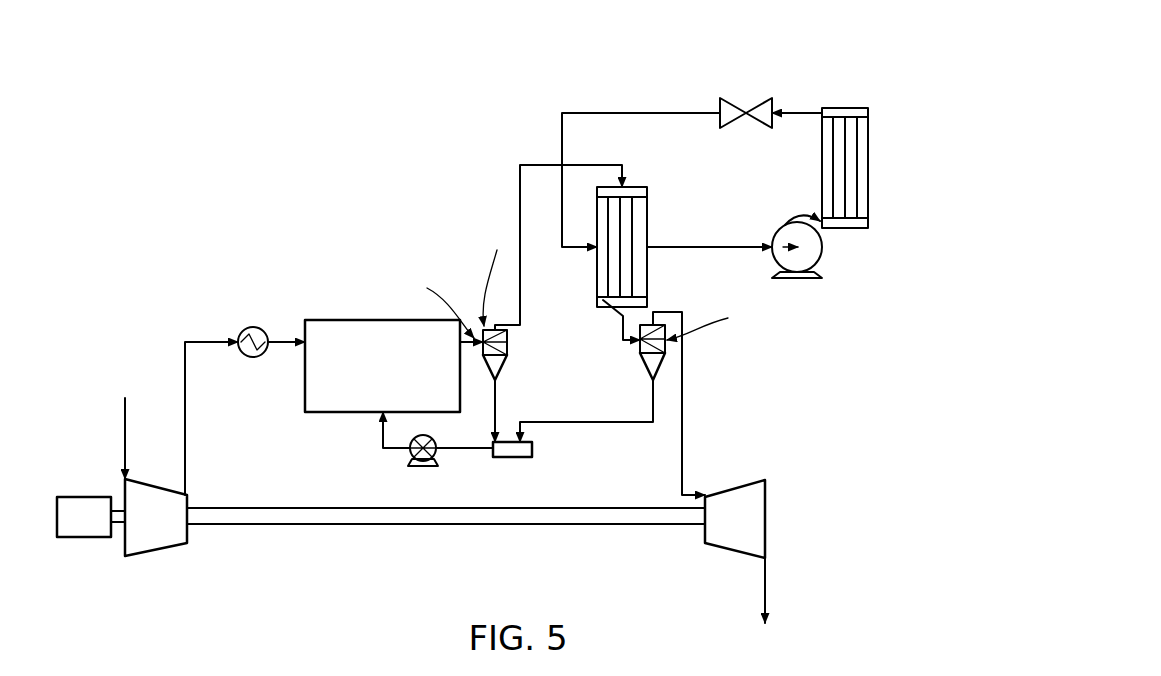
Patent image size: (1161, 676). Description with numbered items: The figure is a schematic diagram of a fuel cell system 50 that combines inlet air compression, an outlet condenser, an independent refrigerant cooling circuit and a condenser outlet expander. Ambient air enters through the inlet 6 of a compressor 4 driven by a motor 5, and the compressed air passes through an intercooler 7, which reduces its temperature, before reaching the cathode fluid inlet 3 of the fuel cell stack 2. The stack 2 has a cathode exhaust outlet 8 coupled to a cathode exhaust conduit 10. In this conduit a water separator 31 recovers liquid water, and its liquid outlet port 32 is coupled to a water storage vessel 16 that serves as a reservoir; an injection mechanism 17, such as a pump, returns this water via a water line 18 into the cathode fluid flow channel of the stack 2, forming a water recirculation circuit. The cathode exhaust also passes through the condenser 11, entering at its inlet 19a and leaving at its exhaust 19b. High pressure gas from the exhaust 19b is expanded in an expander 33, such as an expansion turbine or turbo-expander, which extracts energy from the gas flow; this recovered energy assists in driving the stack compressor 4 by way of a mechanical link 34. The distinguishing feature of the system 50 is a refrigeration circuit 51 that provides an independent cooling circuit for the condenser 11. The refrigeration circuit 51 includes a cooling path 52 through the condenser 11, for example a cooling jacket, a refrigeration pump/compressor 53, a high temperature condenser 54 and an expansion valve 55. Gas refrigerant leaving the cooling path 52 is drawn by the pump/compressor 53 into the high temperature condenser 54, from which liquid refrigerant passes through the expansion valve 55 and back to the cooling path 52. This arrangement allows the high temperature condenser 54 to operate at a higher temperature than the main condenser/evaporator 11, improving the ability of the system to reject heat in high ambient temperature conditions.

The fuel cell stack 2 is at (352, 320).
The cathode fluid inlet 3 is at (278, 340).
The compressor 4 is at (160, 548).
The motor 5 is at (85, 537).
The inlet 6 is at (122, 425).
The intercooler 7 is at (255, 357).
The cathode exhaust outlet 8 is at (465, 346).
The cathode exhaust conduit 10 is at (520, 178).
The condenser 11 is at (585, 243).
The water storage vessel 16 is at (532, 450).
The injection mechanism 17 is at (415, 460).
The water line 18 is at (383, 440).
The condenser inlet 19a is at (622, 185).
The condenser exhaust 19b is at (600, 298).
The water separator 31 is at (508, 345).
The liquid outlet port 32 is at (497, 380).
The expander 33 is at (765, 515).
The mechanical link 34 is at (437, 525).
The fuel cell system 50 is at (330, 142).
The refrigeration circuit 51 is at (840, 57).
The cooling path 52 is at (647, 237).
The refrigeration pump/compressor 53 is at (810, 278).
The high temperature condenser 54 is at (866, 228).
The expansion valve 55 is at (728, 100).